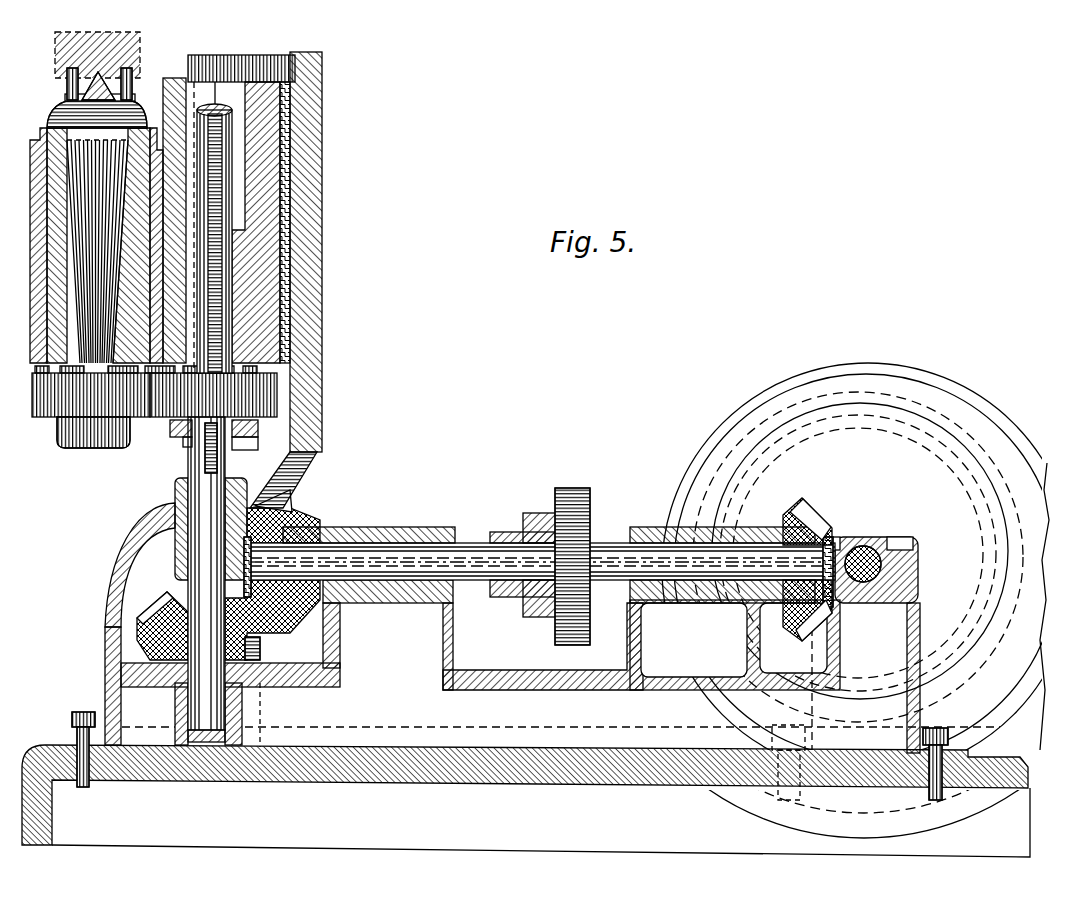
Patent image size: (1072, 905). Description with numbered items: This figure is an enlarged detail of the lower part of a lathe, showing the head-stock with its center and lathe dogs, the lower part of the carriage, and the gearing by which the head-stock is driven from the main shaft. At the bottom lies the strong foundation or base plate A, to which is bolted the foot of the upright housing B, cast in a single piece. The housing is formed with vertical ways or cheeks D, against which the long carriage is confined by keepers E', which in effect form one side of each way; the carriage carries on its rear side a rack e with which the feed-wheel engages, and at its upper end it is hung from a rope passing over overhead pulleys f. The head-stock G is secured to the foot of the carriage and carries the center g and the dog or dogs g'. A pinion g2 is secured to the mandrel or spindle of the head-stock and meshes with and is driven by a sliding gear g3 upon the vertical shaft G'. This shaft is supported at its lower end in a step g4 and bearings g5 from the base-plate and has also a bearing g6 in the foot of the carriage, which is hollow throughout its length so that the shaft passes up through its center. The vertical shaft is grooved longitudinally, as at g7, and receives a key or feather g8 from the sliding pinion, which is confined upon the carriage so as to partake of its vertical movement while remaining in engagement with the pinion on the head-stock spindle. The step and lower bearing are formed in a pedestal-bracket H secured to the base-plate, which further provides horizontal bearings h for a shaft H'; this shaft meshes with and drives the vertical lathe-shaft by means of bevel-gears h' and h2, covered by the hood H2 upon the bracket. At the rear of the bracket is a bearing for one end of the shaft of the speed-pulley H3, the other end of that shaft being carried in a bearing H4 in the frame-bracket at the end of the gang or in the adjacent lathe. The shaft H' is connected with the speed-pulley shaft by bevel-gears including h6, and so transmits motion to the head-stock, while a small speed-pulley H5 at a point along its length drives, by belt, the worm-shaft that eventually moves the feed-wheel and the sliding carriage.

The foundation or base plate A is at (526, 801).
The upright housing B is at (286, 280).
The vertical ways or cheeks D is at (224, 254).
The keepers E' is at (241, 55).
The head-stock G is at (95, 245).
The vertical shaft G' is at (206, 579).
The pedestal-bracket H is at (506, 662).
The shaft H' is at (539, 572).
The hood H2 is at (105, 623).
The speed-pulley H3 is at (866, 546).
The bearing H4 is at (832, 566).
The small speed-pulley H5 is at (558, 503).
The rack e is at (296, 290).
The overhead pulleys f is at (223, 260).
The center g is at (97, 80).
The dog or dogs g' is at (94, 89).
The pinion g2 is at (91, 410).
The sliding gear g3 is at (213, 395).
The step g4 is at (243, 706).
The bearings g5 is at (180, 548).
The bearing g6 is at (256, 222).
The groove g7 is at (205, 457).
The key or feather g8 is at (160, 366).
The horizontal bearings h is at (549, 557).
The bevel-gear h' is at (272, 575).
The bevel-gear h2 is at (162, 626).
The bevel-gear h6 is at (807, 569).